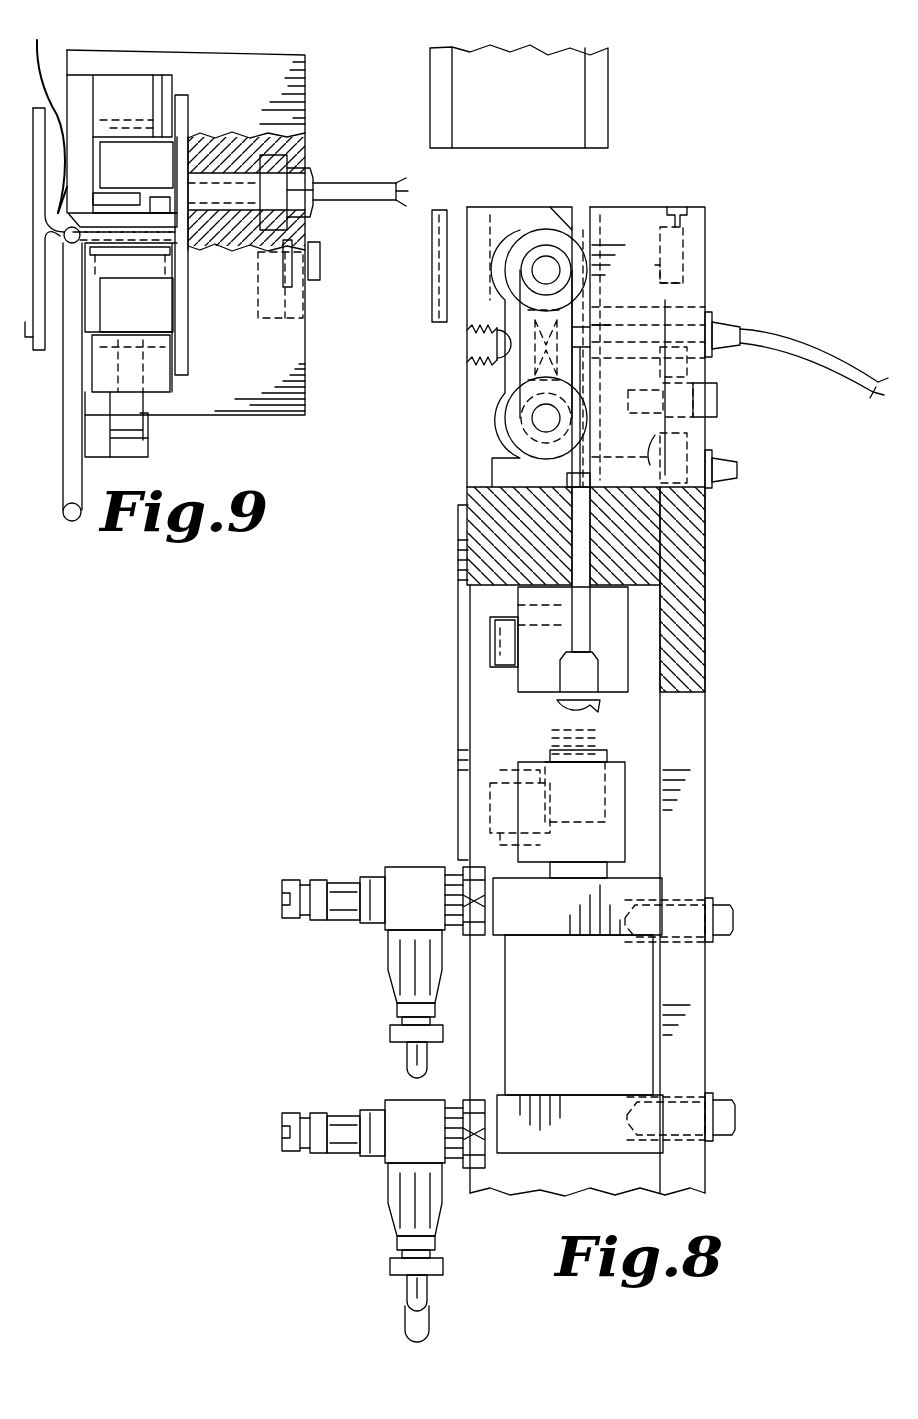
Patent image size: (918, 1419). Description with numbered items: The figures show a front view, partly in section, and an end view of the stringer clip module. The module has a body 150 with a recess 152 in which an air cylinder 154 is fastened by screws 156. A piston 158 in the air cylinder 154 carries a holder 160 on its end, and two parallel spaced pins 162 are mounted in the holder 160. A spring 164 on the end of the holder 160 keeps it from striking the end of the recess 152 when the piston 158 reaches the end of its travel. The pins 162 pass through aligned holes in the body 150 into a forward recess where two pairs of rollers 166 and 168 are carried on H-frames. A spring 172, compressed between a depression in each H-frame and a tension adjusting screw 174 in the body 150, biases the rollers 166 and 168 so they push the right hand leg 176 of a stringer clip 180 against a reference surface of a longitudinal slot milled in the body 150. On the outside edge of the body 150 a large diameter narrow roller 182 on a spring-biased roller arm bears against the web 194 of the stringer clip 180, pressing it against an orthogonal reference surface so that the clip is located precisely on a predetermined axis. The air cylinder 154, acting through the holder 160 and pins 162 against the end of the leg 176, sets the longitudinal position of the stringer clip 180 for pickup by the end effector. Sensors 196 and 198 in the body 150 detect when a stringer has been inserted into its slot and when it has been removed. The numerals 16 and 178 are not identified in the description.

In FIG. 8, the belt/chain link assembly 16 is at (505, 310).
In FIG. 8, the body 150 is at (490, 548).
In FIG. 8, the recess 152 is at (660, 708).
In FIG. 8, the air cylinder 154 is at (620, 1000).
In FIG. 8, the screws 156 is at (720, 915).
In FIG. 8, the piston 158 is at (660, 872).
In FIG. 8, the holder 160 is at (616, 658).
In FIG. 8, the pins 162 is at (660, 560).
In FIG. 8, the spring 164 is at (600, 740).
In FIG. 9, the rollers 166 is at (188, 308).
In FIG. 9, the rollers 168 is at (145, 178).
In FIG. 8, the spring 172 is at (485, 370).
In FIG. 8, the tension adjusting screw 174 is at (467, 350).
In FIG. 8, the right hand leg 176 is at (597, 118).
In FIG. 8, the link with rollers 178 is at (530, 290).
In FIG. 9, the stringer clip 180 is at (30, 337).
In FIG. 8, the stringer clip 180 is at (418, 143).
In FIG. 9, the roller 182 is at (55, 510).
In FIG. 9, the web 194 is at (46, 106).
In FIG. 8, the web 194 is at (540, 108).
In FIG. 8, the sensor 196 is at (680, 320).
In FIG. 8, the sensor 198 is at (655, 435).